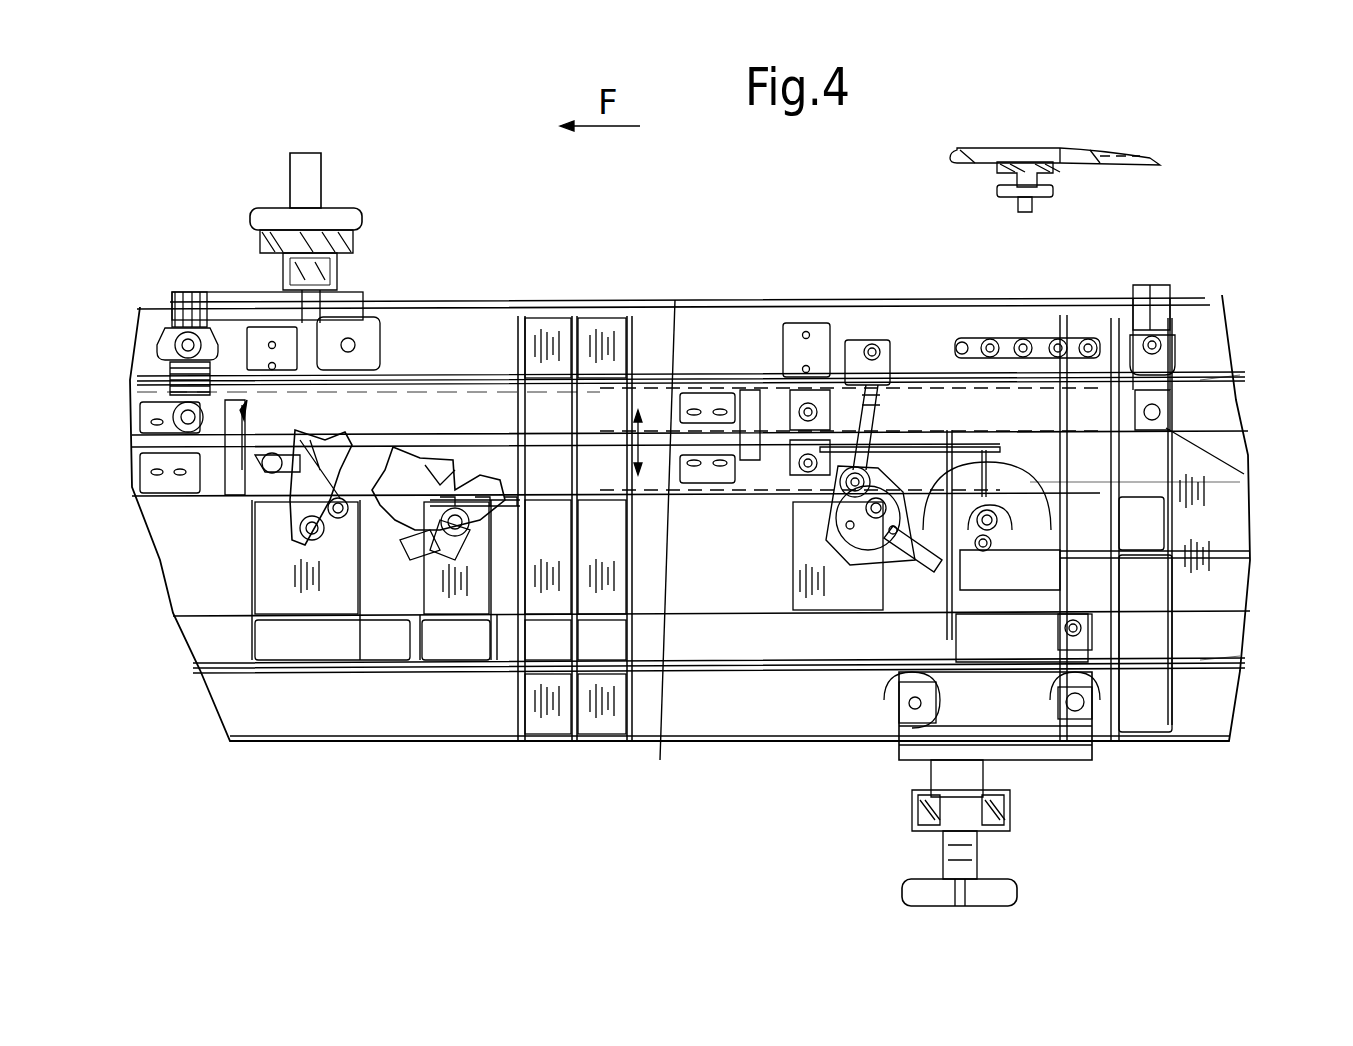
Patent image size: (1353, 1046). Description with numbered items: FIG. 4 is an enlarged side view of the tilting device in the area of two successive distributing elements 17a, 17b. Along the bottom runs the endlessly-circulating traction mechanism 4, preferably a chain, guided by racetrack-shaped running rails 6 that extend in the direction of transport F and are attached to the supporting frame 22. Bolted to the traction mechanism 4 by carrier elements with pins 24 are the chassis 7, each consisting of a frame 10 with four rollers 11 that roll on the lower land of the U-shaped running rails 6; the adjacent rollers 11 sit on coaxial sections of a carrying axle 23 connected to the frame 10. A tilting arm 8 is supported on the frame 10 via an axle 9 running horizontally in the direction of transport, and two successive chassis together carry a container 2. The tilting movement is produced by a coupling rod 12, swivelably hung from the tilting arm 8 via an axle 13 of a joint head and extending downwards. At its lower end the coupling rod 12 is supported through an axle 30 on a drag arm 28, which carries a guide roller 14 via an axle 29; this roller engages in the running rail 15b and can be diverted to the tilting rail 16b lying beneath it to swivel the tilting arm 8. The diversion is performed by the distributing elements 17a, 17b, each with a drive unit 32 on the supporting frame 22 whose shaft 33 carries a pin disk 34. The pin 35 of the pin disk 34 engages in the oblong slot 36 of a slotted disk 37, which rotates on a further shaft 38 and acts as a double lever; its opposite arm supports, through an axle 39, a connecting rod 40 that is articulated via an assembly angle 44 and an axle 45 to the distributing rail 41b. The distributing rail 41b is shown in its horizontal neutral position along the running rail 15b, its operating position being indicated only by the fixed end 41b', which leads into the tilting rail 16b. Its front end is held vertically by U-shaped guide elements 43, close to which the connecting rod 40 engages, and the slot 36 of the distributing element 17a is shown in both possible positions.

The container 2 is at (1022, 158).
The traction mechanism 4 is at (1072, 328).
The running rail 6 is at (457, 328).
The chassis 7 is at (192, 265).
The tilting arm 8 is at (313, 167).
The axle 9 is at (317, 213).
The frame 10 is at (248, 298).
The roller 11 is at (160, 340).
The coupling rod 12 is at (342, 293).
The axle 13 is at (340, 260).
The guide roller 14 is at (280, 487).
The running rail 15b is at (1205, 398).
The tilting rail 16b is at (496, 460).
The distributing element 17a is at (440, 410).
The distributing element 17b is at (1030, 482).
The supporting frame 22 is at (548, 715).
The carrying axle 23 is at (173, 302).
The pin 24 is at (992, 338).
The drag arm 28 is at (245, 432).
The axle 29 is at (195, 420).
The axle 30 is at (253, 463).
The drive unit 32 is at (1100, 565).
The shaft 33 is at (1100, 518).
The pin disk 34 is at (1080, 585).
The pin 35 is at (918, 600).
The slot 36 is at (905, 600).
The slotted disk 37 is at (345, 530).
The shaft 38 is at (868, 585).
The axle 39 is at (815, 530).
The connecting rod 40 is at (895, 330).
The distributing rail 41b is at (657, 504).
The fixed end of distributing rail 41b' is at (650, 697).
The guide element 43 is at (748, 405).
The assembly angle 44 is at (843, 360).
The axle 45 is at (862, 365).